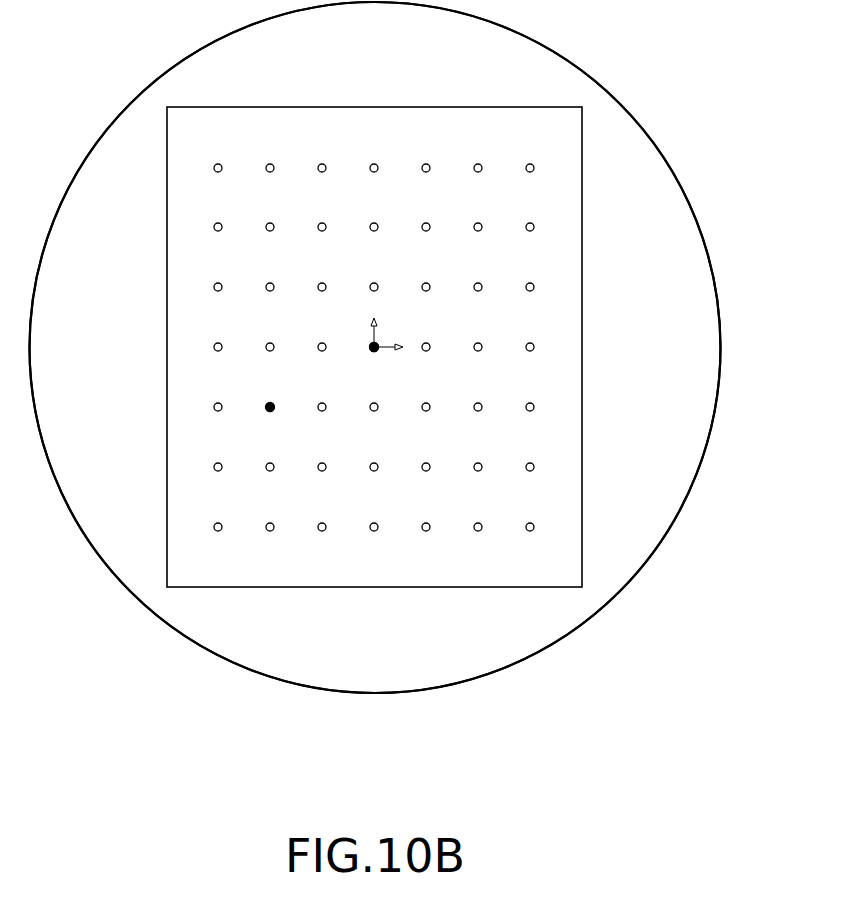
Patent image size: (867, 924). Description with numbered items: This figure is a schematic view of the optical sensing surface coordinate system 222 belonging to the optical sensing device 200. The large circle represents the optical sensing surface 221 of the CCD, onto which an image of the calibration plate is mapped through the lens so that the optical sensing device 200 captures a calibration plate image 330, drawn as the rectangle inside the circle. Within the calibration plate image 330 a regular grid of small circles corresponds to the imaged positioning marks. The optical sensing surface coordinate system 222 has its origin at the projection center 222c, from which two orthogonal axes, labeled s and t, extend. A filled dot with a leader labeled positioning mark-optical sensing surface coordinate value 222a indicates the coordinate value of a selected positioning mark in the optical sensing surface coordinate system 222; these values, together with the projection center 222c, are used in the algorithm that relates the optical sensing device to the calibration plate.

The optical sensing device 200 is at (717, 119).
The optical sensing surface 221 is at (673, 530).
The calibration plate image 330 is at (176, 482).
The optical sensing surface coordinate system 222 is at (381, 344).
The positioning mark-optical sensing surface coordinate value 222a is at (269, 402).
The projection center 222c is at (369, 352).